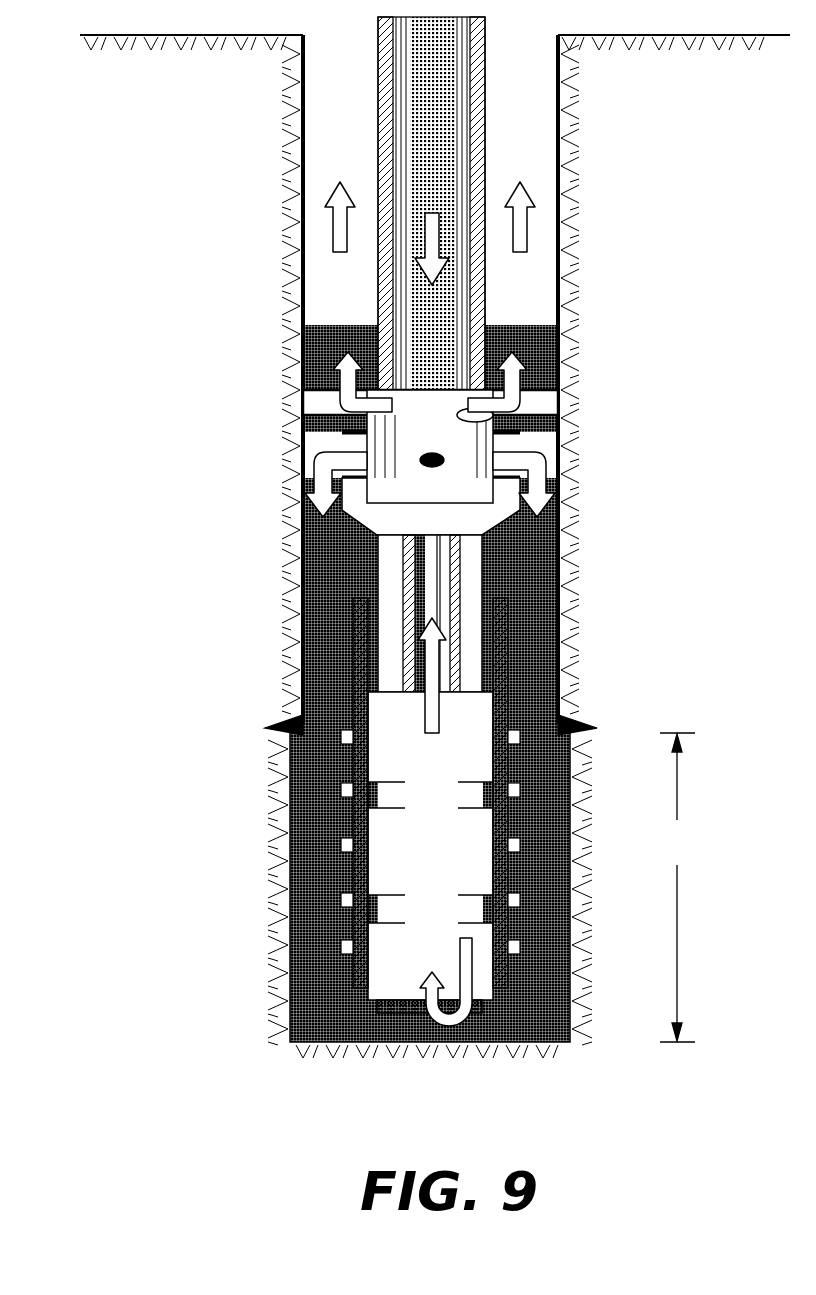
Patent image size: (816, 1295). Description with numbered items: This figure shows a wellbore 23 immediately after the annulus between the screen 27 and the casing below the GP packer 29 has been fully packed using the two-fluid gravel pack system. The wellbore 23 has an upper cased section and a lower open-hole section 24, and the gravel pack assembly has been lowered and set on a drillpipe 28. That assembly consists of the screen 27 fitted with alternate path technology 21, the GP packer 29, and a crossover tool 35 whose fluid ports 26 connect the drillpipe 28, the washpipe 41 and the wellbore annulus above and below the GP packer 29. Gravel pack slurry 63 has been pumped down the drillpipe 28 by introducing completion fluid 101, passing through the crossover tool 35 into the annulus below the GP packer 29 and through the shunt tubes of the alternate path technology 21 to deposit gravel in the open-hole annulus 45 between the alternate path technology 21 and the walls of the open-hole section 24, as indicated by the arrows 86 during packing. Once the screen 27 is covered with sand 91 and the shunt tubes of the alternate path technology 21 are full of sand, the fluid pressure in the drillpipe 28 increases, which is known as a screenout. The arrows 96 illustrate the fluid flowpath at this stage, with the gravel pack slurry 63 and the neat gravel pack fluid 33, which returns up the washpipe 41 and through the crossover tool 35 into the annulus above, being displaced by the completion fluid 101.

The completion fluid 101 is at (440, 108).
The arrows 96 is at (345, 385).
The drillpipe 28 is at (486, 266).
The neat gravel pack fluid 33 is at (550, 303).
The crossover tool 35 is at (303, 336).
The GP packer 29 is at (303, 380).
The gravel pack slurry 63 is at (445, 357).
The arrows 86 is at (528, 366).
The fluid ports 26 is at (527, 422).
The wellbore 23 is at (558, 636).
The sand 91 is at (547, 686).
The washpipe 41 is at (428, 762).
The open-hole annulus 45 is at (677, 887).
The alternate path technology 21 is at (352, 873).
The screen 27 is at (400, 960).
The open-hole section 24 is at (573, 935).